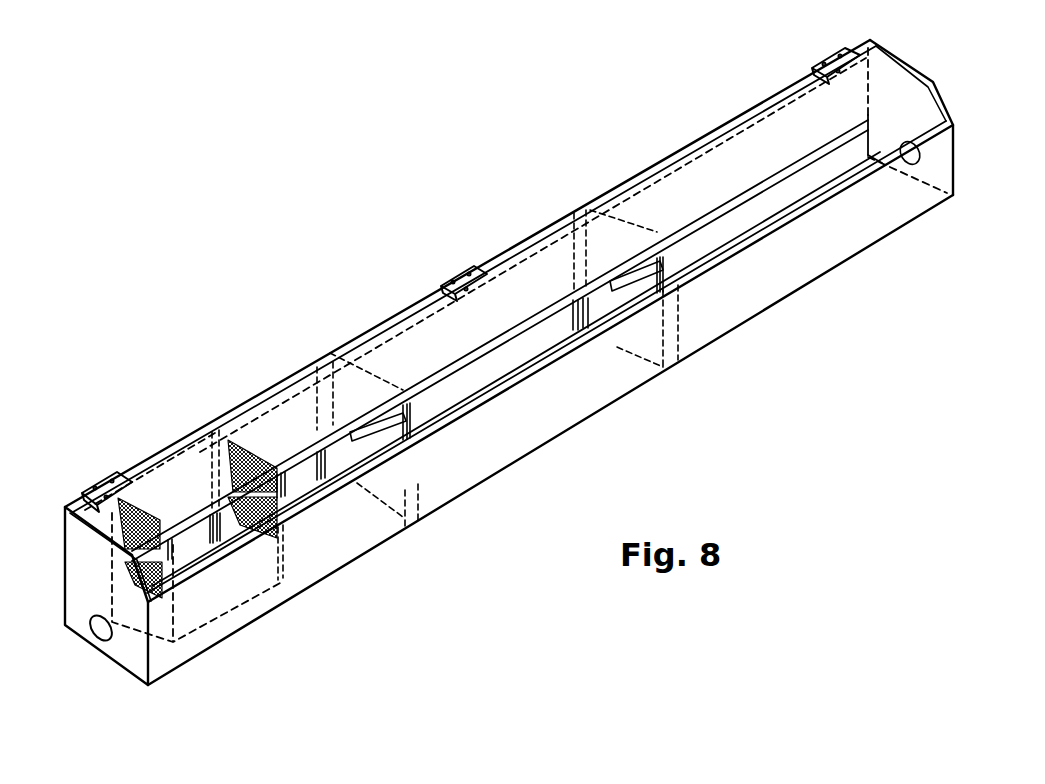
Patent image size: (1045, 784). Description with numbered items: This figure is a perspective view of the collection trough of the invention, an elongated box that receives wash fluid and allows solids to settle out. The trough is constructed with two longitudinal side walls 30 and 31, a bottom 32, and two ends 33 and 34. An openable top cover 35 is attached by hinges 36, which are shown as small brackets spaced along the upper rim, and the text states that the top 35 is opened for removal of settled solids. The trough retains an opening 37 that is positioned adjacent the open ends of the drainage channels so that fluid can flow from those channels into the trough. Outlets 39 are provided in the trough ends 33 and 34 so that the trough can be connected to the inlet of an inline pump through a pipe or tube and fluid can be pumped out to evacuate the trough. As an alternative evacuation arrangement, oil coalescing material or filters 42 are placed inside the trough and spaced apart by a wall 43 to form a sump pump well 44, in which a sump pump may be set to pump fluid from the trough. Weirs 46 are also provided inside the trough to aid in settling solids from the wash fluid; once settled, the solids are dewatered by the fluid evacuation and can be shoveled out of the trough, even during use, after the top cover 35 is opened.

The longitudinal side wall 30 is at (548, 330).
The longitudinal side wall 31 is at (765, 292).
The bottom 32 is at (470, 398).
The end 33 is at (140, 668).
The end 34 is at (937, 113).
The openable top cover 35 is at (390, 342).
The hinge 36 is at (103, 483).
The opening 37 is at (766, 190).
The outlet 39 is at (95, 642).
The oil coalescing material or filter 42 is at (187, 480).
The wall 43 is at (200, 568).
The sump pump well 44 is at (163, 512).
The weir 46 is at (615, 318).